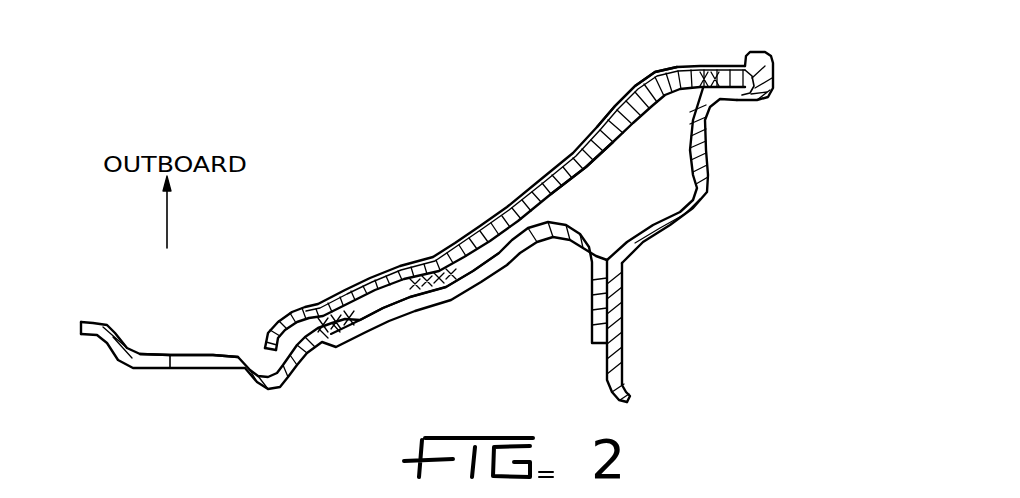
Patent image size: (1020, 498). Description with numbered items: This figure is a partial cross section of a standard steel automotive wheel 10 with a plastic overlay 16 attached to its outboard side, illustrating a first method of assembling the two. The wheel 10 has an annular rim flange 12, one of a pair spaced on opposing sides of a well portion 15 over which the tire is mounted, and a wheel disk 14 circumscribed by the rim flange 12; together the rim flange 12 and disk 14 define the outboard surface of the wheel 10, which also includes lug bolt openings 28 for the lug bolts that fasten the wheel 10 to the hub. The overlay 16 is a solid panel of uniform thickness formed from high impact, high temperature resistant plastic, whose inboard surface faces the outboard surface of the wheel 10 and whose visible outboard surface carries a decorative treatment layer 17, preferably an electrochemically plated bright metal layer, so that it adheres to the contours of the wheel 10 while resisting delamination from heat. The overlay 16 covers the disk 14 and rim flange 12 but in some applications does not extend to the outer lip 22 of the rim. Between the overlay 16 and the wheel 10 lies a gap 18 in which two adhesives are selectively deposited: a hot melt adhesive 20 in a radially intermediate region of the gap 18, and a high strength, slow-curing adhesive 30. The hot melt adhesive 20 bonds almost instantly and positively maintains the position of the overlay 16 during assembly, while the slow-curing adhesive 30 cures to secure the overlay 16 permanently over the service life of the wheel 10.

The wheel 10 is at (505, 208).
The rim flange 12 is at (715, 175).
The wheel disk 14 is at (344, 305).
The well portion 15 is at (664, 331).
The overlay 16 is at (505, 210).
The decorative treatment layer 17 is at (619, 84).
The gap 18 is at (581, 141).
The hot melt adhesive 20 is at (415, 276).
The outer lip 22 is at (795, 62).
The lug bolt openings 28 is at (189, 322).
The high strength, slow-curing adhesive 30 is at (498, 175).